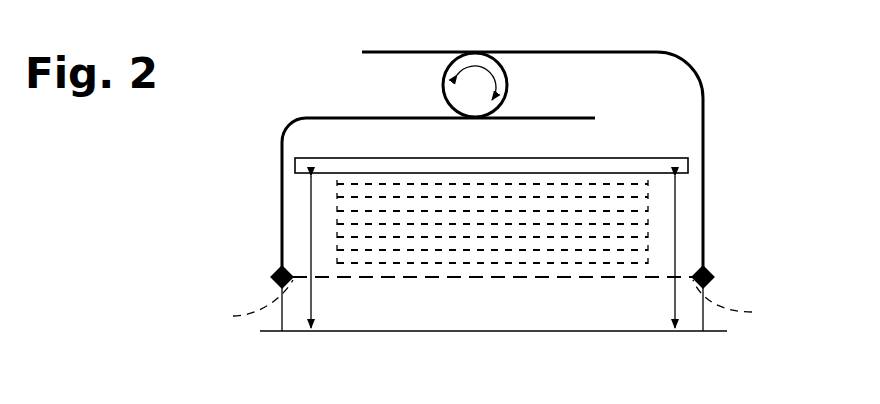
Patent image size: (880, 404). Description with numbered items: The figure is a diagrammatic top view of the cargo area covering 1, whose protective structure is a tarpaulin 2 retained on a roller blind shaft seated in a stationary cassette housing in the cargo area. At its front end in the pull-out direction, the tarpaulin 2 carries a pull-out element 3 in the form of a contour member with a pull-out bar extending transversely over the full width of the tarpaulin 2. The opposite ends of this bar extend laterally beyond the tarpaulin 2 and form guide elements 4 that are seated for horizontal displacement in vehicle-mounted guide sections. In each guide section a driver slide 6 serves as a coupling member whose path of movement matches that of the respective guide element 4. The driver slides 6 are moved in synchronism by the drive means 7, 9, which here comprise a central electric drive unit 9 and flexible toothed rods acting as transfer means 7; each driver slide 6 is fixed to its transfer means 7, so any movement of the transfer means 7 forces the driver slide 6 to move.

The cargo area covering 1 is at (584, 146).
The tarpaulin 2 is at (472, 252).
The pull-out element 3 is at (498, 279).
The guide elements 4 is at (492, 310).
The driver slide 6 is at (277, 272).
The transfer means 7 is at (342, 118).
The drive means 9 is at (494, 46).